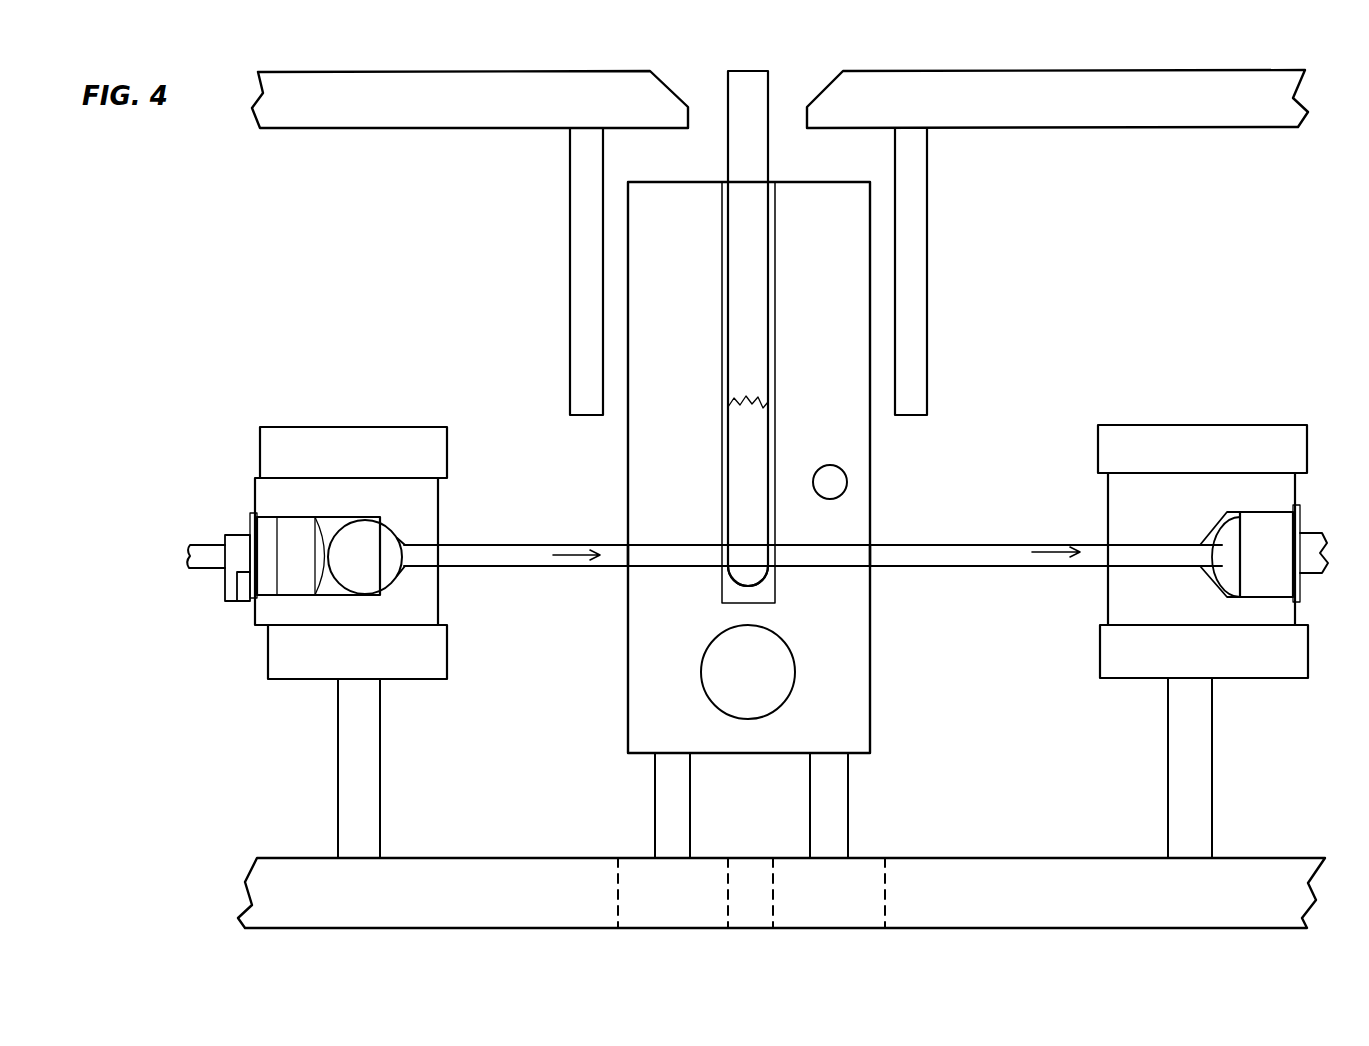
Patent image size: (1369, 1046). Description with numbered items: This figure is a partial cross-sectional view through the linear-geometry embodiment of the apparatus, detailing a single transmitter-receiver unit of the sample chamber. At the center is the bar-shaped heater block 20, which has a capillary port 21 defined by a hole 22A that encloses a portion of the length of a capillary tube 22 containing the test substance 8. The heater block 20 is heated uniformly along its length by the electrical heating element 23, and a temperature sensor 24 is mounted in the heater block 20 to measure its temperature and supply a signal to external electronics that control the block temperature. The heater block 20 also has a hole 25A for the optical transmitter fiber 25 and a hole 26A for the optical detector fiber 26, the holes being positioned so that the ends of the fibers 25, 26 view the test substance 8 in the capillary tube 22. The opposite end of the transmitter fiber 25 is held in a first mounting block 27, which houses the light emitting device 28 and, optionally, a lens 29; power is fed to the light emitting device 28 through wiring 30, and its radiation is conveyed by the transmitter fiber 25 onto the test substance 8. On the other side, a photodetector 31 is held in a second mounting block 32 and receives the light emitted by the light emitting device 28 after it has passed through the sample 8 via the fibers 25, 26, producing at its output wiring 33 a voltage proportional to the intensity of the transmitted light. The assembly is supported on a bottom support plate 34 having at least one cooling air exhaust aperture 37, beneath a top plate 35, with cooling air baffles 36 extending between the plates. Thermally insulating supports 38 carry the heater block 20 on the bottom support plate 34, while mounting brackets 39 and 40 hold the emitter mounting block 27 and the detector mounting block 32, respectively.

The test substance 8 is at (750, 463).
The heater block 20 is at (870, 285).
The capillary port 21 is at (720, 278).
The capillary tube 22 is at (768, 82).
The hole 22A is at (772, 603).
The heating element 23 is at (720, 712).
The temperature sensor 24 is at (848, 477).
The optical transmitter fiber 25 is at (550, 567).
The hole for transmitter optical fiber 25A is at (634, 572).
The optical detector fiber 26 is at (945, 567).
The hole for detector optical fiber 26A is at (853, 567).
The mounting block 27 is at (438, 497).
The light emitting device 28 is at (277, 517).
The lens 29 is at (390, 527).
The wiring 30 is at (212, 545).
The photodetector 31 is at (1267, 512).
The mounting block 32 is at (1108, 505).
The output wiring 33 is at (1305, 533).
The bottom support plate 34 is at (955, 858).
The top plate 35 is at (325, 130).
The cooling air baffles 36 is at (570, 303).
The cooling air exhaust aperture 37 is at (862, 858).
The thermally insulating supports 38 is at (690, 835).
The mounting bracket 39 is at (405, 680).
The mounting bracket 40 is at (1255, 680).